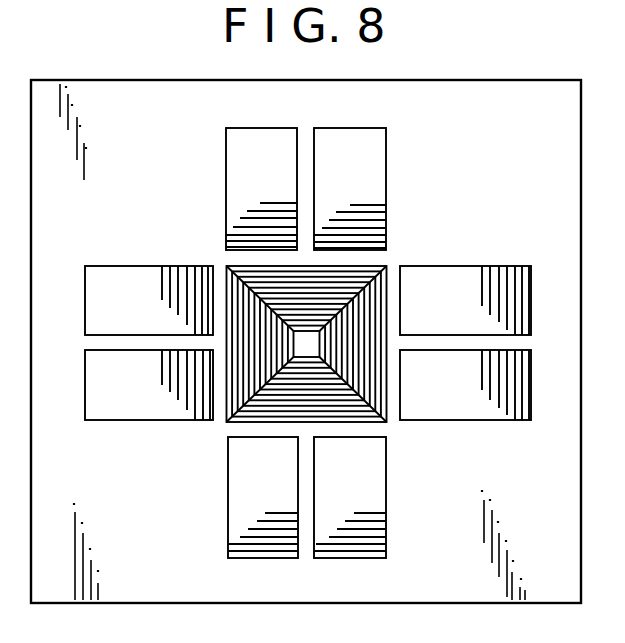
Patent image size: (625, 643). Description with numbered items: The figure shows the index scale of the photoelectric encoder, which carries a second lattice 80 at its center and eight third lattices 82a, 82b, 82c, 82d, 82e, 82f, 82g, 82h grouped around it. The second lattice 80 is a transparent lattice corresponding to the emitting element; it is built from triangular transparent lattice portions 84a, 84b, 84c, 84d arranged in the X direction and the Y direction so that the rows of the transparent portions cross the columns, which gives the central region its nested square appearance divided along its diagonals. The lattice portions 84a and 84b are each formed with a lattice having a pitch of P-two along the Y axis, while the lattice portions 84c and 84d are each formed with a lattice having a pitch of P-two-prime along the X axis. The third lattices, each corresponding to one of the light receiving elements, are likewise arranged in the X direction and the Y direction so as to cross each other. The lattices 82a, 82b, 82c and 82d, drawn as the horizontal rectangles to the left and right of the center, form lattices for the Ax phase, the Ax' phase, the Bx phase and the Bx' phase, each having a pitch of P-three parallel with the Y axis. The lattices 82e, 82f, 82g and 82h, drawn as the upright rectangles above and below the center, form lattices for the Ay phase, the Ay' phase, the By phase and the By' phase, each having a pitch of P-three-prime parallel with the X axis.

The second lattice 80 is at (394, 260).
The third lattice 82a is at (107, 264).
The third lattice 82b is at (102, 421).
The third lattice 82c is at (505, 421).
The third lattice 82d is at (504, 264).
The third lattice 82e is at (228, 542).
The third lattice 82f is at (387, 535).
The third lattice 82g is at (386, 152).
The third lattice 82h is at (226, 167).
The triangular transparent lattice portion 84a is at (228, 417).
The triangular transparent lattice portion 84b is at (385, 405).
The triangular transparent lattice portion 84c is at (382, 417).
The triangular transparent lattice portion 84d is at (227, 267).